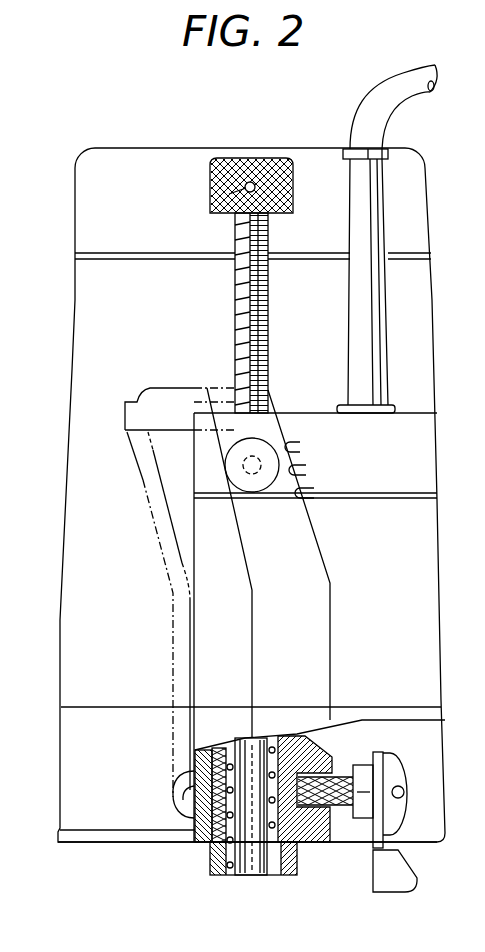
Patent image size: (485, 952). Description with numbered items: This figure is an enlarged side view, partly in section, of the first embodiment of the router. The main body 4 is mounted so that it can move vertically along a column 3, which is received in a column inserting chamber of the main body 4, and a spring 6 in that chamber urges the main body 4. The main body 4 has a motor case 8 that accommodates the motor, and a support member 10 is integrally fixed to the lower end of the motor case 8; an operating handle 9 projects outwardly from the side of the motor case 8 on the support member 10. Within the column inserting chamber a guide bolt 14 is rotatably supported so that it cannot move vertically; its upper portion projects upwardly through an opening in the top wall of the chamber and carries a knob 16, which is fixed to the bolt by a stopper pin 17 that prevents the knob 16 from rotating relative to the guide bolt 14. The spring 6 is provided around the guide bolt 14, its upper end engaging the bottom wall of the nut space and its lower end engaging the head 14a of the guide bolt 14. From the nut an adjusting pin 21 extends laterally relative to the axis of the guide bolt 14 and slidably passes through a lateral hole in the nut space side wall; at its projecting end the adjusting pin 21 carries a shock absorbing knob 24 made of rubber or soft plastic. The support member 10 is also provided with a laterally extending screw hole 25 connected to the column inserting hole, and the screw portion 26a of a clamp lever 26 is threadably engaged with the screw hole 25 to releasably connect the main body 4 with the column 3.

The column 3 is at (210, 851).
The main body 4 is at (71, 223).
The spring 6 is at (233, 877).
The motor case 8 is at (73, 276).
The operating handle 9 is at (155, 531).
The support member 10 is at (193, 800).
The guide bolt 14 is at (269, 330).
The head of the guide bolt 14a is at (263, 876).
The knob 16 is at (209, 184).
The stopper pin 17 is at (209, 201).
The adjusting pin 21 is at (252, 475).
The shock absorbing knob 24 is at (267, 480).
The screw hole 25 is at (324, 764).
The clamp lever 26 is at (405, 875).
The screw portion 26a is at (318, 840).